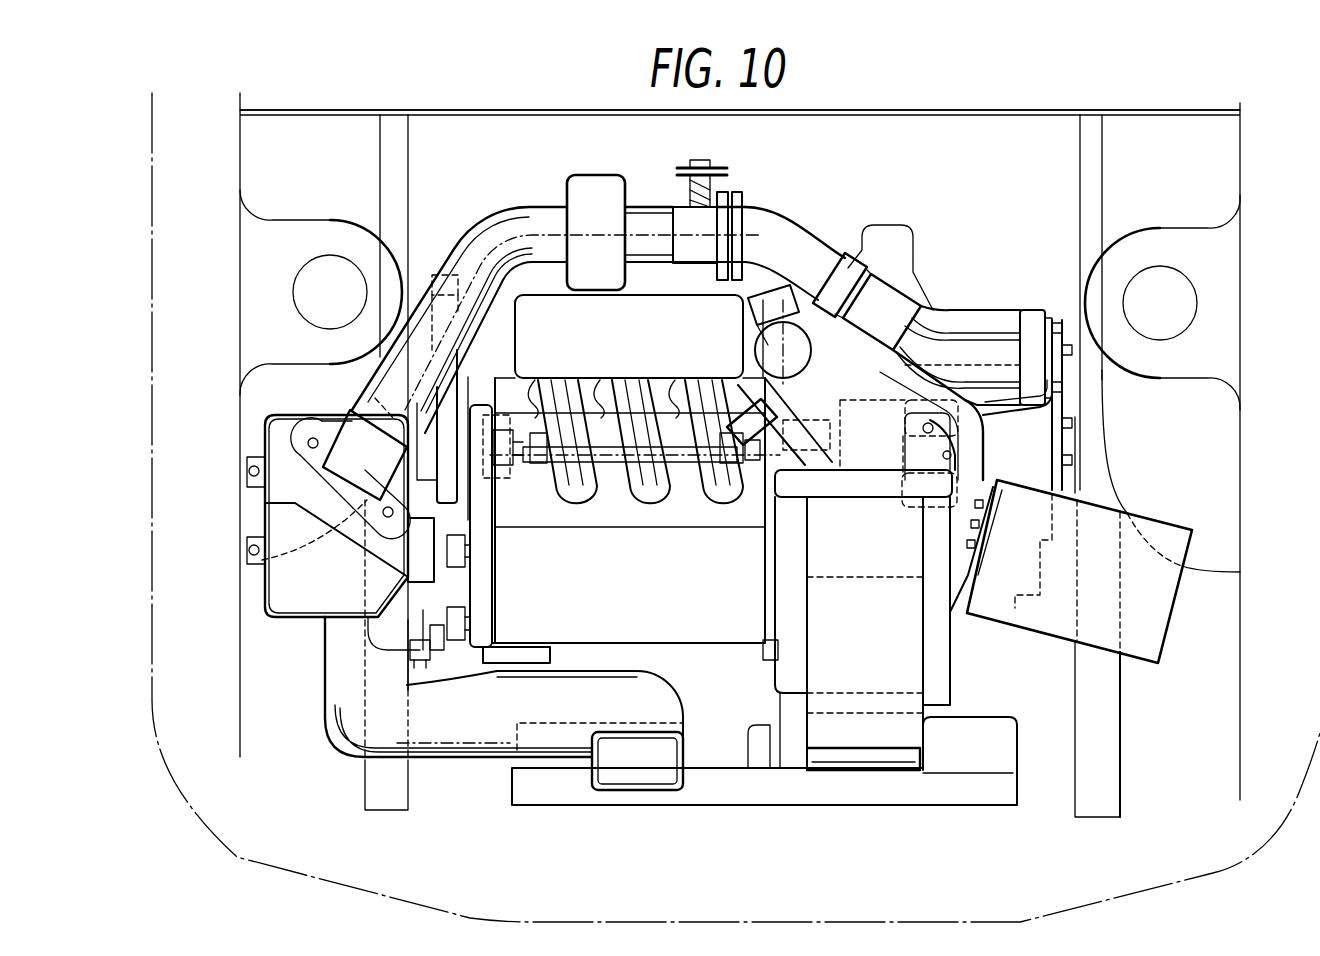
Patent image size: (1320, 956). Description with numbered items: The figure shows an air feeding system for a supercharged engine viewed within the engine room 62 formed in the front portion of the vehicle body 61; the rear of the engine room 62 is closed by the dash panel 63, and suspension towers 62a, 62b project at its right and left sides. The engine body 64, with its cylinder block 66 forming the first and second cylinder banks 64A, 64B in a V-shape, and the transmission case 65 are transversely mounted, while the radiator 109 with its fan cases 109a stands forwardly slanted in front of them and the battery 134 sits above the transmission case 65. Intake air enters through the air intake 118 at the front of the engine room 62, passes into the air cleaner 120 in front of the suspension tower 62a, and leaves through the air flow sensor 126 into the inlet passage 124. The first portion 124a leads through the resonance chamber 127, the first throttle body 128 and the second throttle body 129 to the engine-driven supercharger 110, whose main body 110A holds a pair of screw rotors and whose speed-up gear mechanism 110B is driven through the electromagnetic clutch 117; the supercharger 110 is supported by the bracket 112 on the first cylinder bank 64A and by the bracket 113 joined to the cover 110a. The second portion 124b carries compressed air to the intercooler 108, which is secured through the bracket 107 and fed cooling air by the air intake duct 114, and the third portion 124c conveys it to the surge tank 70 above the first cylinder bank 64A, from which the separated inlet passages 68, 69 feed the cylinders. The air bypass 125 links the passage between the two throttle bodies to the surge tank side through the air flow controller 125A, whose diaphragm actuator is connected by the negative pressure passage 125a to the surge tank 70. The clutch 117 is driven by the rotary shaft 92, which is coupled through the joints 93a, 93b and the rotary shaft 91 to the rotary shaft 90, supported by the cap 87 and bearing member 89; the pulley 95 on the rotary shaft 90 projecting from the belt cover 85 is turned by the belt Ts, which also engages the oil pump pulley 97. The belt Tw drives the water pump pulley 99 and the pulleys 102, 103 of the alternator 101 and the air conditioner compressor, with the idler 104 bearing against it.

The vehicle body 61 is at (152, 260).
The engine room 62 is at (975, 165).
The suspension tower 62a is at (1163, 240).
The suspension tower 62b is at (292, 230).
The dash panel 63 is at (800, 113).
The engine body 64 is at (700, 650).
The first cylinder bank 64A is at (545, 276).
The second cylinder bank 64B is at (663, 678).
The transmission case 65 is at (1047, 460).
The cylinder block 66 is at (768, 513).
The separated inlet passages 68 is at (668, 400).
The separated inlet passages 69 is at (715, 497).
The surge tank 70 is at (632, 296).
The belt cover 85 is at (493, 612).
The cap 87 is at (505, 470).
The bearing member 89 is at (745, 478).
The rotary shaft 90 is at (522, 460).
The rotary shaft 91 is at (608, 462).
The rotary shaft 92 is at (735, 470).
The joint 93a is at (535, 400).
The joint 93b is at (713, 400).
The pulley 95 is at (463, 497).
The pulley 97 is at (345, 292).
The pulley 99 is at (375, 398).
The alternator 101 is at (552, 657).
The pulley 102 is at (403, 612).
The pulley 103 is at (433, 653).
The idler 104 is at (408, 573).
The bracket 107 is at (763, 650).
The intercooler 108 is at (950, 660).
The radiator 109 is at (960, 805).
The fan cases 109a is at (782, 770).
The engine-driven supercharger 110 is at (1005, 300).
The main body 110A is at (970, 318).
The speed-up gear mechanism 110B is at (863, 620).
The cover 110a is at (1030, 318).
The bracket 112 is at (870, 470).
The bracket 113 is at (1022, 405).
The air intake duct 114 is at (923, 707).
The electromagnetic clutch 117 is at (910, 495).
The air intake 118 is at (490, 760).
The air cleaner 120 is at (294, 605).
The inlet passage 124 is at (504, 202).
The first portion 124a is at (470, 238).
The second portion 124b is at (983, 450).
The third portion 124c is at (838, 457).
The air bypass 125 is at (770, 295).
The air flow controller 125A is at (803, 325).
The negative pressure passage 125a is at (748, 323).
The air flow sensor 126 is at (352, 420).
The resonance chamber 127 is at (588, 175).
The first throttle body 128 is at (685, 215).
The second throttle body 129 is at (848, 265).
The battery 134 is at (1165, 612).
The belt Ts is at (445, 280).
The belt Tw is at (422, 660).